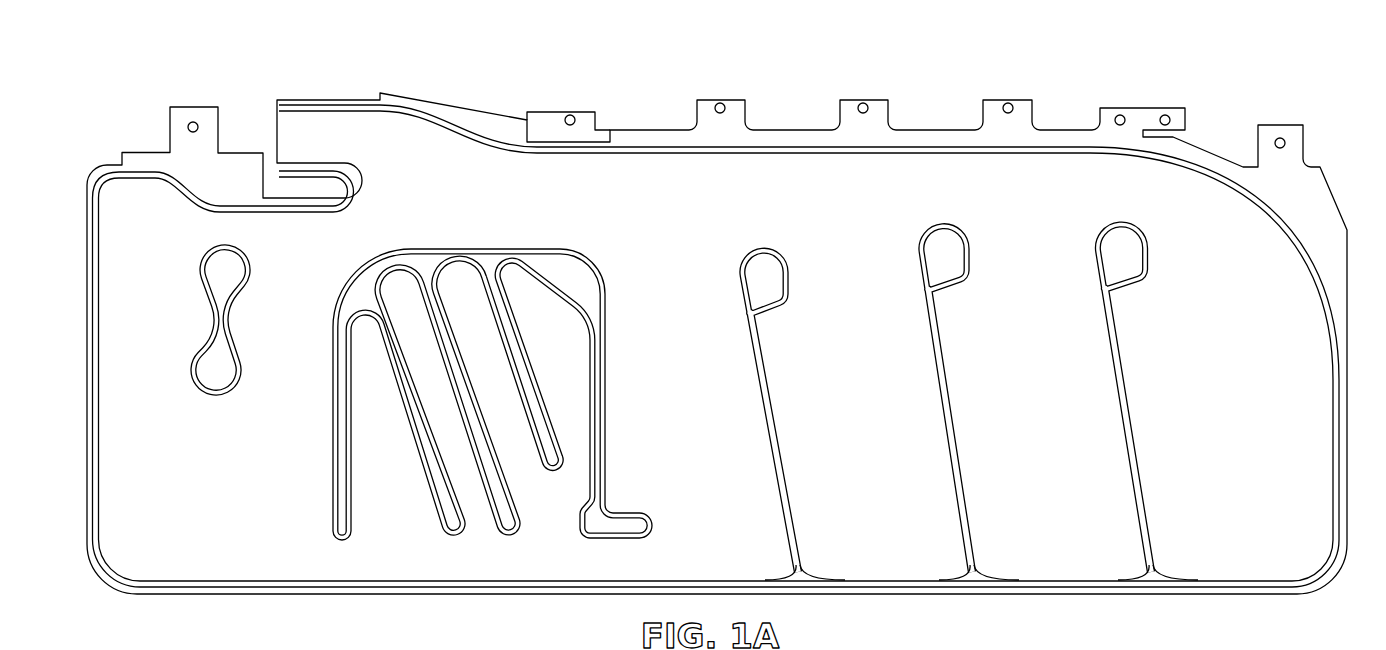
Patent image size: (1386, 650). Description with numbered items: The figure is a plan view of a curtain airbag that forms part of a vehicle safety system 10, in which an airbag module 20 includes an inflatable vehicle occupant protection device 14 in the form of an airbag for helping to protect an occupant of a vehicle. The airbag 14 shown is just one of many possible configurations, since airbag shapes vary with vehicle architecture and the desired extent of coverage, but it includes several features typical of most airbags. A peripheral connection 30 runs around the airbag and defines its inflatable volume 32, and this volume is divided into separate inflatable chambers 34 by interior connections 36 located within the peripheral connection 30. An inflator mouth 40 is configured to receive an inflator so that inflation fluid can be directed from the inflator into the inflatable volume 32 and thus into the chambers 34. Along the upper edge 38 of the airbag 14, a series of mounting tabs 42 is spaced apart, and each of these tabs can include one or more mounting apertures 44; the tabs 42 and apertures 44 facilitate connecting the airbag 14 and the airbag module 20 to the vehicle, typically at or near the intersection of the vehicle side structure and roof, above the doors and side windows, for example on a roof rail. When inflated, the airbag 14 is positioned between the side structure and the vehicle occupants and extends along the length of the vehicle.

The vehicle safety system 10 is at (704, 329).
The inflatable vehicle occupant protection device 14 is at (704, 329).
The airbag module 20 is at (128, 648).
The peripheral connection 30 is at (97, 368).
The inflatable volume 32 is at (140, 467).
The inflatable chambers 34 is at (303, 485).
The interior connections 36 is at (231, 310).
The upper edge 38 is at (650, 146).
The inflator mouth 40 is at (308, 143).
The mounting tabs 42 is at (189, 125).
The mounting apertures 44 is at (218, 146).